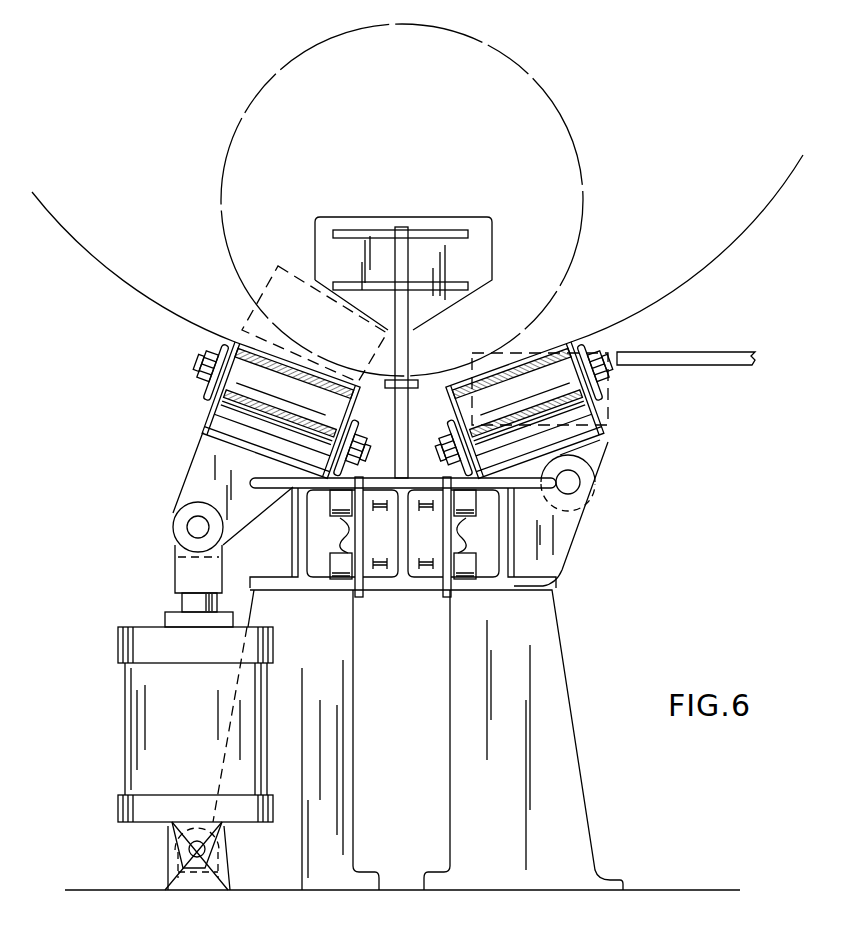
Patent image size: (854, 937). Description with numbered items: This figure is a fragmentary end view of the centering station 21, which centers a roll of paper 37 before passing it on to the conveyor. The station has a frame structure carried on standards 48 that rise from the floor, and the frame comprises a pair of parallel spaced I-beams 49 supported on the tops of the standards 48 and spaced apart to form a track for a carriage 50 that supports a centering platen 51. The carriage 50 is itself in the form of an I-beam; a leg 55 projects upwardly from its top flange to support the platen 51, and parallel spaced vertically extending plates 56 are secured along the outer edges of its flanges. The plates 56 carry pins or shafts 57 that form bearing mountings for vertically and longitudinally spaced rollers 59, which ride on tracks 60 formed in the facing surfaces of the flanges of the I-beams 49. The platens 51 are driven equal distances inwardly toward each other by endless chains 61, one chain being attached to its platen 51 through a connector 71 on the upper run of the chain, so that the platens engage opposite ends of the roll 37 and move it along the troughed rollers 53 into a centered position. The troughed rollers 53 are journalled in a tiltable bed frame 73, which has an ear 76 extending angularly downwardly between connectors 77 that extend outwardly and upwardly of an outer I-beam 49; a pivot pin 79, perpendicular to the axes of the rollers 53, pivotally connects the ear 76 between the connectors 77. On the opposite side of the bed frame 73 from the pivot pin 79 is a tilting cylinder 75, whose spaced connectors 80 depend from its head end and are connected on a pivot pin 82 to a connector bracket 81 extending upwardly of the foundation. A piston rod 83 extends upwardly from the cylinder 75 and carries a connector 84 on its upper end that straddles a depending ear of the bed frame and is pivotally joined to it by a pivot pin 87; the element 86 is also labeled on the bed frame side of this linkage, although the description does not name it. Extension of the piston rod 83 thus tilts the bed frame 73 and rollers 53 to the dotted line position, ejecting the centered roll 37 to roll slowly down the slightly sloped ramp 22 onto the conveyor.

The centering station 21 is at (176, 430).
The ramp 22 is at (738, 352).
The roll of paper 37 is at (505, 47).
The standards 48 is at (355, 757).
The I-beams 49 is at (290, 566).
The carriage 50 is at (412, 598).
The centering platen 51 is at (462, 217).
The troughed rollers 53 is at (240, 341).
The leg 55 is at (410, 348).
The plates 56 is at (375, 590).
The pins or shafts 57 is at (352, 535).
The rollers 59 is at (330, 508).
The tracks 60 is at (330, 494).
The endless chains 61 is at (403, 533).
The connector 71 is at (438, 480).
The tiltable bed frame 73 is at (604, 444).
The tilting cylinder 75 is at (136, 736).
The ear 76 is at (590, 458).
The connectors 77 is at (570, 530).
The pivot pin 79 is at (578, 486).
The connectors 80 is at (176, 848).
The connector bracket 81 is at (162, 868).
The pivot pin 82 is at (204, 852).
The piston rod 83 is at (184, 600).
The connector 84 is at (176, 547).
The pivot arm 86 is at (185, 468).
The pivot pin 87 is at (190, 526).